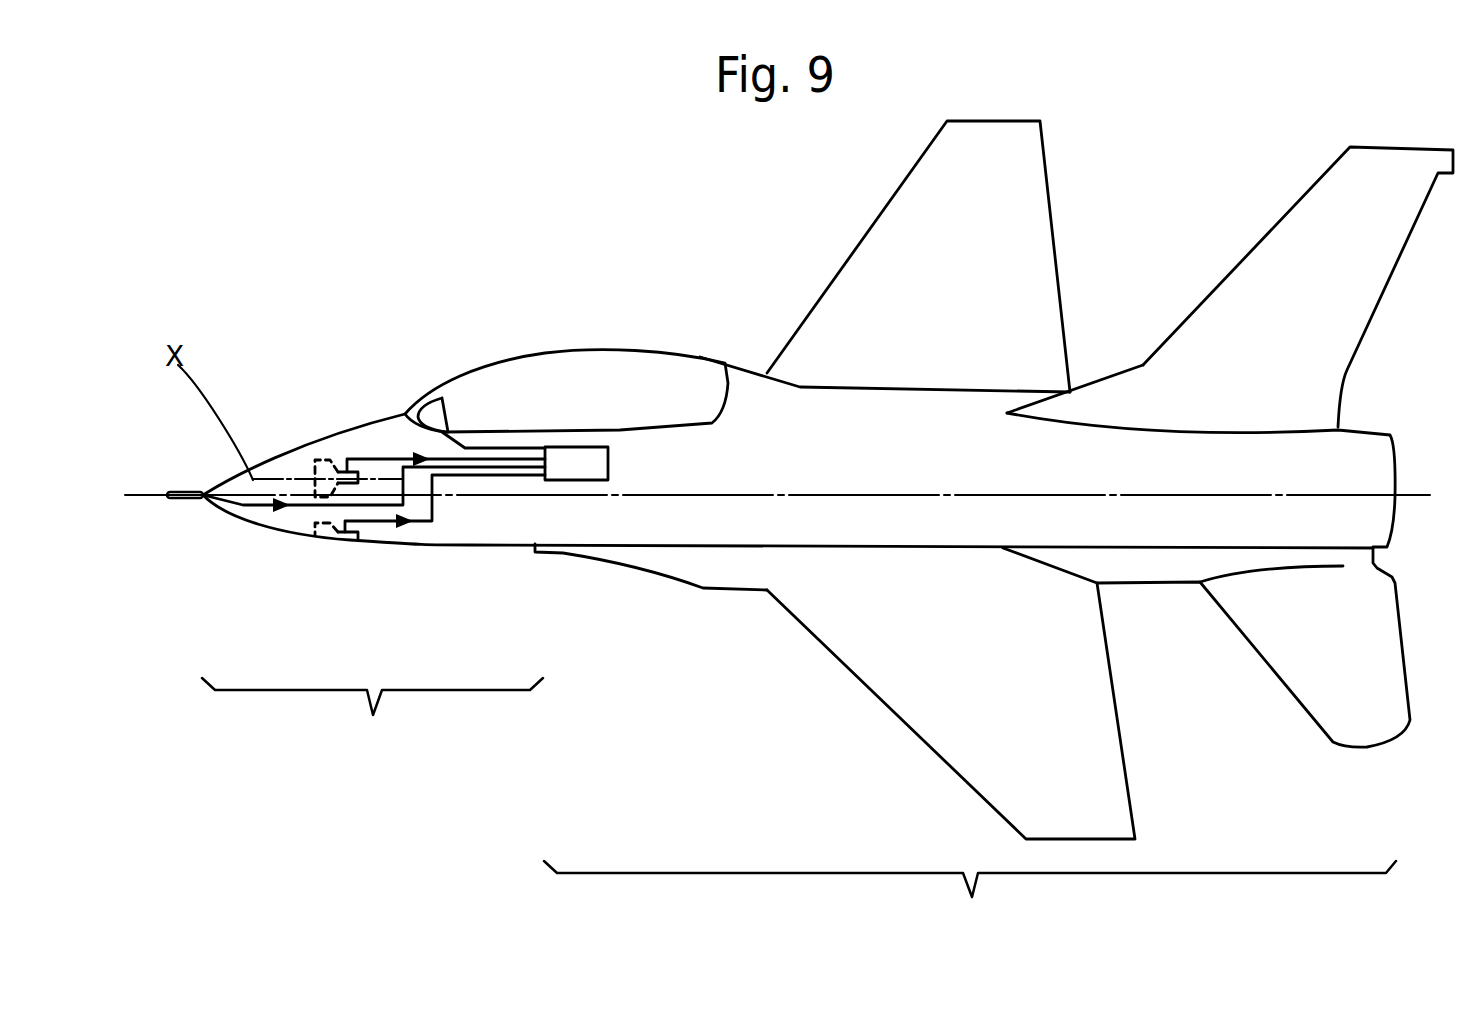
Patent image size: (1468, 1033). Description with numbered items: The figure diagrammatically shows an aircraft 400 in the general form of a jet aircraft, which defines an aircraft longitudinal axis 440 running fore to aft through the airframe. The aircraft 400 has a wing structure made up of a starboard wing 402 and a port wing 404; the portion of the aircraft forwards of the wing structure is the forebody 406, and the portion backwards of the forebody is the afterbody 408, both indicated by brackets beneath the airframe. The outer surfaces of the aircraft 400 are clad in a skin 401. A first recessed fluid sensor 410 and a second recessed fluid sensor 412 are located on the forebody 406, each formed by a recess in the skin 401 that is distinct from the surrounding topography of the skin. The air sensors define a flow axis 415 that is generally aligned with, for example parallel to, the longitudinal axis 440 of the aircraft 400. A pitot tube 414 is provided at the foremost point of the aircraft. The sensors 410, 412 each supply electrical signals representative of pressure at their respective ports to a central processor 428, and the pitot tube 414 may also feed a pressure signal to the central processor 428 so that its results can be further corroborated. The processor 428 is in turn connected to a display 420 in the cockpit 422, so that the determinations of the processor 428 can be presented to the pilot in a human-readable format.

The aircraft 400 is at (518, 300).
The skin 401 is at (353, 437).
The starboard wing 402 is at (892, 313).
The port wing 404 is at (1003, 712).
The forebody 406 is at (372, 714).
The afterbody 408 is at (970, 897).
The first recessed fluid sensor 410 is at (328, 463).
The second recessed fluid sensor 412 is at (328, 538).
The pitot tube 414 is at (178, 492).
The flow axis 415 is at (305, 480).
The display 420 is at (442, 412).
The cockpit 422 is at (630, 395).
The central processor 428 is at (582, 476).
The aircraft longitudinal axis 440 is at (787, 497).